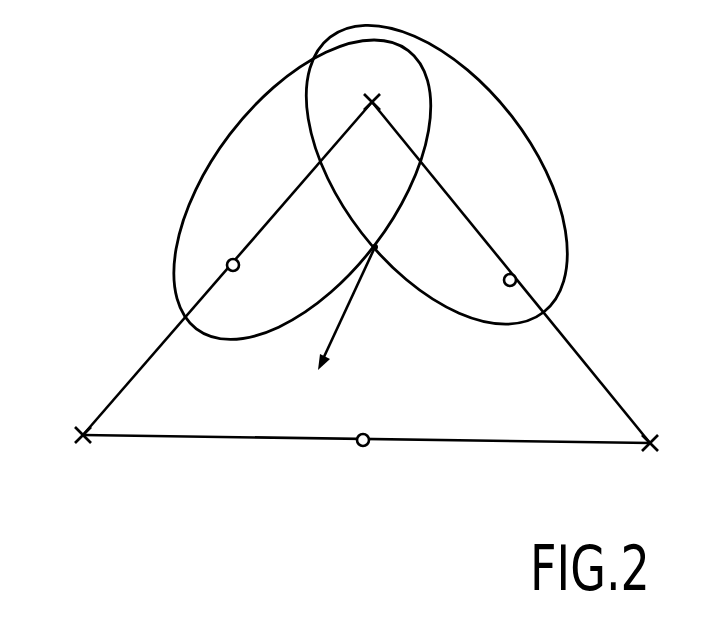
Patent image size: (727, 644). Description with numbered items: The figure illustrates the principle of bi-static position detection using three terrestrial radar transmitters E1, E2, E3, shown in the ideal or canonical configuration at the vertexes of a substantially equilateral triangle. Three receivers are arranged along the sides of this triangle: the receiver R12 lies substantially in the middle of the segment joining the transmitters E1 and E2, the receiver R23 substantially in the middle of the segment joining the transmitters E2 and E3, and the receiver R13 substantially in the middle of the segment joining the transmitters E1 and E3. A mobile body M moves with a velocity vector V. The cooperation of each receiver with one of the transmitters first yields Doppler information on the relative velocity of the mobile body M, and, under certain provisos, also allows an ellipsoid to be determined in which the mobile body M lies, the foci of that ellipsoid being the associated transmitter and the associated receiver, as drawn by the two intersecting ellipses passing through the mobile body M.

The terrestrial radar transmitter E1 is at (366, 78).
The terrestrial radar transmitter E2 is at (69, 412).
The terrestrial radar transmitter E3 is at (666, 421).
The receiver R12 is at (223, 237).
The receiver R13 is at (520, 254).
The receiver R23 is at (357, 465).
The mobile body M is at (366, 211).
The velocity vector V is at (372, 342).